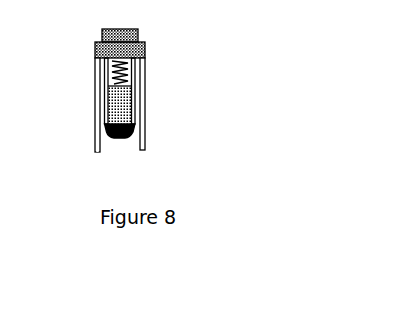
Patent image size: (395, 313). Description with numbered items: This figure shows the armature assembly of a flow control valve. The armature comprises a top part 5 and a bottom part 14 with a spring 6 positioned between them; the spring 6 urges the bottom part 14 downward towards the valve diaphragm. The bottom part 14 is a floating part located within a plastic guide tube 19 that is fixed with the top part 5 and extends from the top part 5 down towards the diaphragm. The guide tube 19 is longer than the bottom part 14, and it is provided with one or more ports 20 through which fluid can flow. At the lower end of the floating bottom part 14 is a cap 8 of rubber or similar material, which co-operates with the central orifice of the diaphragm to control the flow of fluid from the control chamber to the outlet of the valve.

The top part 5 is at (140, 35).
The spring 6 is at (145, 63).
The cap 8 is at (138, 140).
The bottom part 14 is at (128, 105).
The guide tube 19 is at (95, 92).
The ports 20 is at (97, 132).